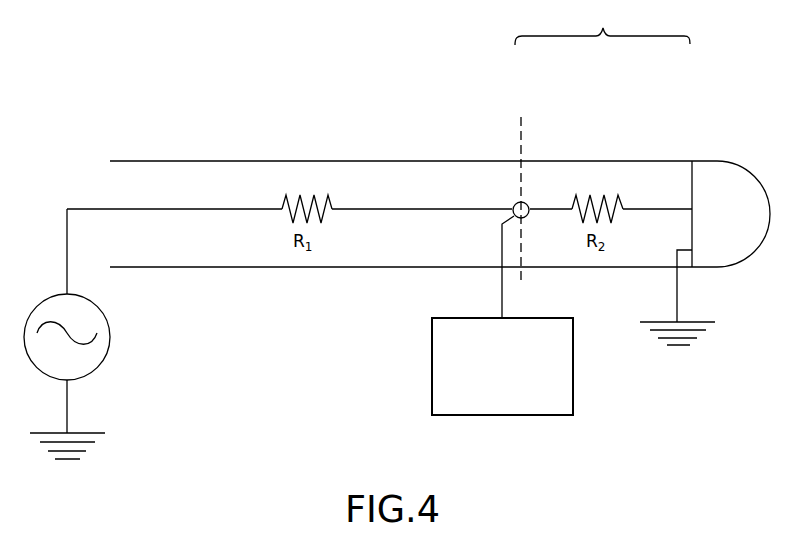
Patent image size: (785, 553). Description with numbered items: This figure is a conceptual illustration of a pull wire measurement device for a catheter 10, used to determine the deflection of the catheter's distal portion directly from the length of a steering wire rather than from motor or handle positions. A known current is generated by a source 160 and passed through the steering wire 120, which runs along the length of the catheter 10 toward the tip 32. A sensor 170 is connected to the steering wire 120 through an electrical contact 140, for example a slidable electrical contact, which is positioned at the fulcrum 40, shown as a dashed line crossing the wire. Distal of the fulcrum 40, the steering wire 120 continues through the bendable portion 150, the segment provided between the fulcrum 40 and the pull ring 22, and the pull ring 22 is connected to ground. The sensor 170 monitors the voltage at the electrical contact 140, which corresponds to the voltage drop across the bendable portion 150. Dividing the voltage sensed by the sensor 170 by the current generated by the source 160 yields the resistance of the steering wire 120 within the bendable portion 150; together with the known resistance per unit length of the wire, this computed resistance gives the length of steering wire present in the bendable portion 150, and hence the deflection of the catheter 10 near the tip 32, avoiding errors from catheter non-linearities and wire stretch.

The catheter 10 is at (337, 115).
The steering wire 120 is at (158, 209).
The electrical contact 140 is at (513, 204).
The fulcrum 40 is at (522, 187).
The bendable portion 150 is at (602, 25).
The pull ring 22 is at (690, 176).
The tip 32 is at (706, 176).
The source 160 is at (52, 370).
The sensor 170 is at (487, 396).